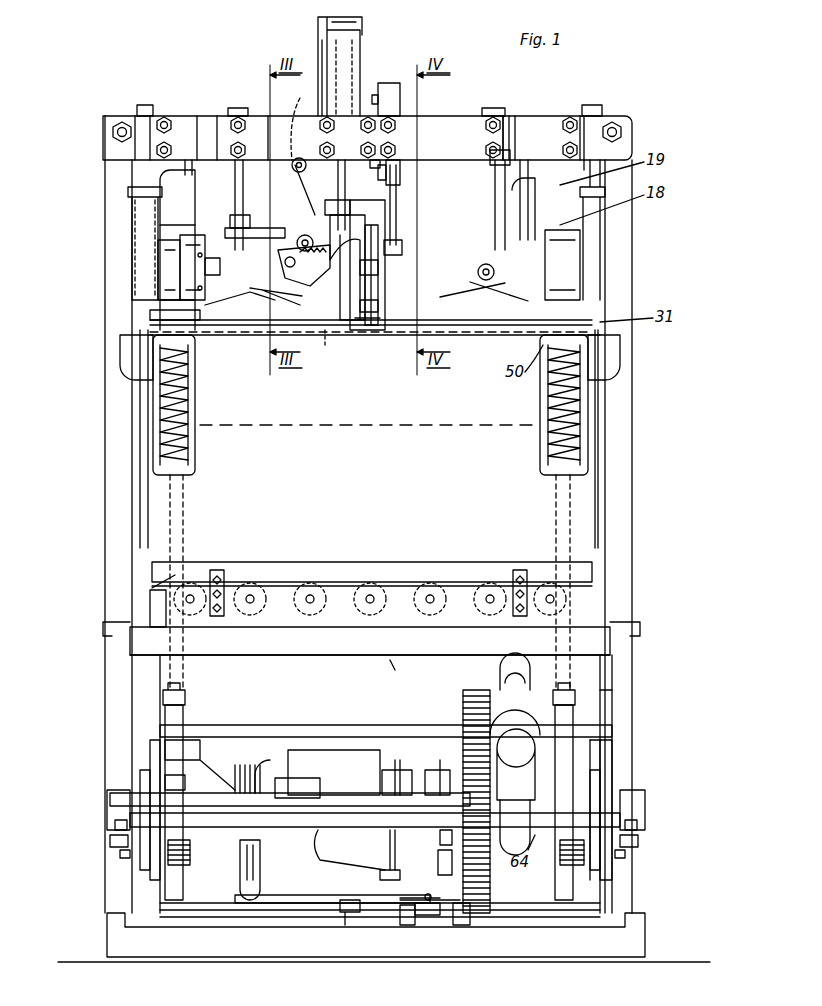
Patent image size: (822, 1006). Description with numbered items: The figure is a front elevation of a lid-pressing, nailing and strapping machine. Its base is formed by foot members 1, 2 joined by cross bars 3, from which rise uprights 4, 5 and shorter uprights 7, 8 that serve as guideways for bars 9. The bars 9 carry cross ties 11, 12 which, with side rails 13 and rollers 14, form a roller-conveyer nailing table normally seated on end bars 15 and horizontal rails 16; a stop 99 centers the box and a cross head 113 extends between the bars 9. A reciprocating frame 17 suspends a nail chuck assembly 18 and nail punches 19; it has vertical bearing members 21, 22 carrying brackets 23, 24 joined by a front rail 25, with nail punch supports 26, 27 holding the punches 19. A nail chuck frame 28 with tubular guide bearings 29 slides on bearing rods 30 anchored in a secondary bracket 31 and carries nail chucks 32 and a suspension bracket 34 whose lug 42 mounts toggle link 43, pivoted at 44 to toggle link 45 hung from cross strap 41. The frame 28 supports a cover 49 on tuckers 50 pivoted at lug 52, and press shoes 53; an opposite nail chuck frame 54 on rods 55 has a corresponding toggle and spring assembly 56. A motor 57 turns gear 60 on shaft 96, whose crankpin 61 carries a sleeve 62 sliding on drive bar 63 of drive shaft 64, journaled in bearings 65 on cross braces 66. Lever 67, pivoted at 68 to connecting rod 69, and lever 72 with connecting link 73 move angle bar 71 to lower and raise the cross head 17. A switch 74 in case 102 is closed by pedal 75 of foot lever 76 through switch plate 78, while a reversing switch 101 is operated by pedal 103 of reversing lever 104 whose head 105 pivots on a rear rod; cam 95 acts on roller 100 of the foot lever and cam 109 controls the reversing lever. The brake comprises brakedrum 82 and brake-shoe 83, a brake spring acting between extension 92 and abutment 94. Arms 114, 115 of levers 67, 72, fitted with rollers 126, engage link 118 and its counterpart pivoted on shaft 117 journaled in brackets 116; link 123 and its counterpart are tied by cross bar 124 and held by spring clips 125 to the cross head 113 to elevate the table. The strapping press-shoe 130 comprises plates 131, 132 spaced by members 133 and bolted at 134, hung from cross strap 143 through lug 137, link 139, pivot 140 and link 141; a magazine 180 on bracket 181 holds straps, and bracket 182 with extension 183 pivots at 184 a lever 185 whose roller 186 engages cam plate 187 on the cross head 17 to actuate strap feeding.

The foot member 1 is at (645, 945).
The foot member 2 is at (107, 940).
The cross bars 3 is at (240, 957).
The upright 4 is at (630, 522).
The upright 5 is at (105, 500).
The short upright 7 is at (610, 722).
The upright 8 is at (160, 705).
The bar 9 is at (150, 750).
The cross tie 11 is at (600, 618).
The cross tie 12 is at (150, 600).
The side rails 13 is at (276, 595).
The rollers 14 is at (320, 580).
The end bars 15 is at (118, 627).
The horizontal rails 16 is at (394, 667).
The reciprocating frame 17 is at (548, 115).
The nail chuck assembly 18 is at (177, 249).
The nail driving punches 19 is at (185, 180).
The vertical bearing member 21 is at (120, 358).
The vertical bearing member 22 is at (618, 358).
The bracket 23 is at (140, 142).
The bracket 24 is at (582, 150).
The front rail 25 is at (438, 122).
The nail punch support 26 is at (195, 165).
The nail punch support 27 is at (548, 160).
The nail chuck and lid engaging frame 28 is at (160, 265).
The tubular guide bearings 29 is at (132, 212).
The bearing rods 30 is at (130, 178).
The secondary bracket 31 is at (150, 300).
The nail chucks 32 is at (150, 284).
The suspension bracket 34 is at (200, 250).
The cross strap 41 is at (238, 108).
The lug 42 is at (245, 295).
The toggle link 43 is at (255, 228).
The pivot 44 is at (243, 205).
The toggle link 45 is at (255, 138).
The cover 49 is at (325, 345).
The tucker 50 is at (190, 340).
The lug 52 is at (125, 355).
The press shoes 53 is at (282, 292).
The nail chuck frame 54 is at (565, 268).
The vertical rods 55 is at (600, 178).
The toggle link and spring assembly 56 is at (495, 205).
The motor 57 is at (335, 752).
The gear 60 is at (463, 695).
The crankpin 61 is at (600, 745).
The sleeve 62 is at (612, 700).
The cylindrical drive bar 63 is at (500, 665).
The drive shaft 64 is at (107, 805).
The bearings 65 is at (140, 790).
The cross braces 66 is at (120, 855).
The lever 67 is at (600, 770).
The pivot 68 is at (612, 712).
The connecting rod 69 is at (556, 517).
The angle bar 71 is at (495, 325).
The lever 72 is at (238, 758).
The connecting link 73 is at (183, 517).
The switch 74 is at (440, 910).
The foot pedal 75 is at (462, 925).
The foot lever 76 is at (490, 885).
The switch plate 78 is at (428, 894).
The brakedrum 82 is at (262, 765).
The brake-shoe 83 is at (242, 765).
The extension 92 is at (240, 888).
The abutment 94 is at (285, 905).
The cam 95 is at (441, 769).
The shaft 96 is at (355, 798).
The stop 99 is at (160, 586).
The roller 100 is at (440, 840).
The second switch 101 is at (405, 925).
The case 102 is at (425, 905).
The reversing pedal 103 is at (372, 943).
The reversing foot lever 104 is at (385, 880).
The head 105 is at (388, 840).
The second cam 109 is at (398, 769).
The cross head 113 is at (325, 700).
The arm 114 is at (557, 865).
The arm 115 is at (192, 865).
The bracket 116 is at (110, 841).
The shaft 117 is at (349, 851).
The link 118 is at (518, 800).
The second link 123 is at (185, 783).
The cross bar 124 is at (272, 808).
The spring clip 125 is at (145, 775).
The rollers 126 is at (170, 865).
The press-shoe 130 is at (378, 330).
The plate 131 is at (378, 292).
The plate 132 is at (348, 290).
The spacing members 133 is at (372, 325).
The bolts 134 is at (378, 268).
The lug 137 is at (402, 245).
The link 139 is at (400, 183).
The pivot 140 is at (386, 172).
The second link 141 is at (380, 162).
The cross strap 143 is at (388, 83).
The magazine 180 is at (321, 34).
The bracket 181 is at (352, 210).
The second bracket 182 is at (322, 272).
The vertical extension 183 is at (345, 190).
The pivot 184 is at (247, 216).
The lever 185 is at (297, 243).
The roller 186 is at (310, 172).
The cam plate 187 is at (292, 123).